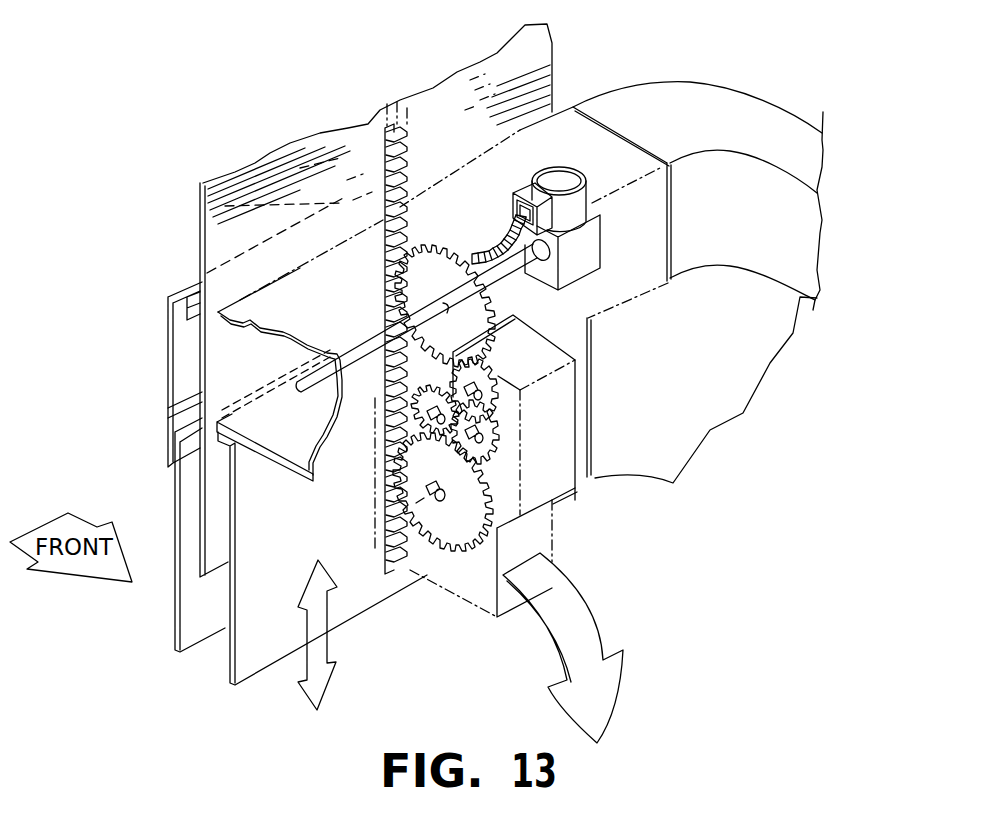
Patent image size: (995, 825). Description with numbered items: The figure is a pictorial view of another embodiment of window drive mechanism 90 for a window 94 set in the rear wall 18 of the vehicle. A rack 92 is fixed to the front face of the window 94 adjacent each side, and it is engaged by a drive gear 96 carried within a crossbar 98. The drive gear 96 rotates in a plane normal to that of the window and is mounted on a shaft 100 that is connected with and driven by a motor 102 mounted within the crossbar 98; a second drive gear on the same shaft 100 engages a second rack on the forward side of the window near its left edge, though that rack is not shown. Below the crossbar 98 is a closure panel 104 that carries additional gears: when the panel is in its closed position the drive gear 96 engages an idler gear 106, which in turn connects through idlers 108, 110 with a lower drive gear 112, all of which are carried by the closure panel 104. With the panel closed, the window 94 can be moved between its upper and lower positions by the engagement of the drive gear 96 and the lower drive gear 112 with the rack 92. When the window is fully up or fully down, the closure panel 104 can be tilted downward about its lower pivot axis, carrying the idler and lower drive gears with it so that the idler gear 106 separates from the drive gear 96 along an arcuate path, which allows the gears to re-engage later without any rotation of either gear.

The rear wall 18 is at (682, 112).
The window drive mechanism 90 is at (598, 180).
The rack 92 is at (385, 160).
The window 94 is at (540, 45).
The drive gear 96 is at (480, 303).
The crossbar 98 is at (603, 138).
The shaft 100 is at (320, 385).
The motor 102 is at (580, 257).
The closure panel 104 is at (372, 587).
The idler gear 106 is at (498, 402).
The idler 108 is at (493, 450).
The idler 110 is at (446, 402).
The lower drive gear 112 is at (458, 528).